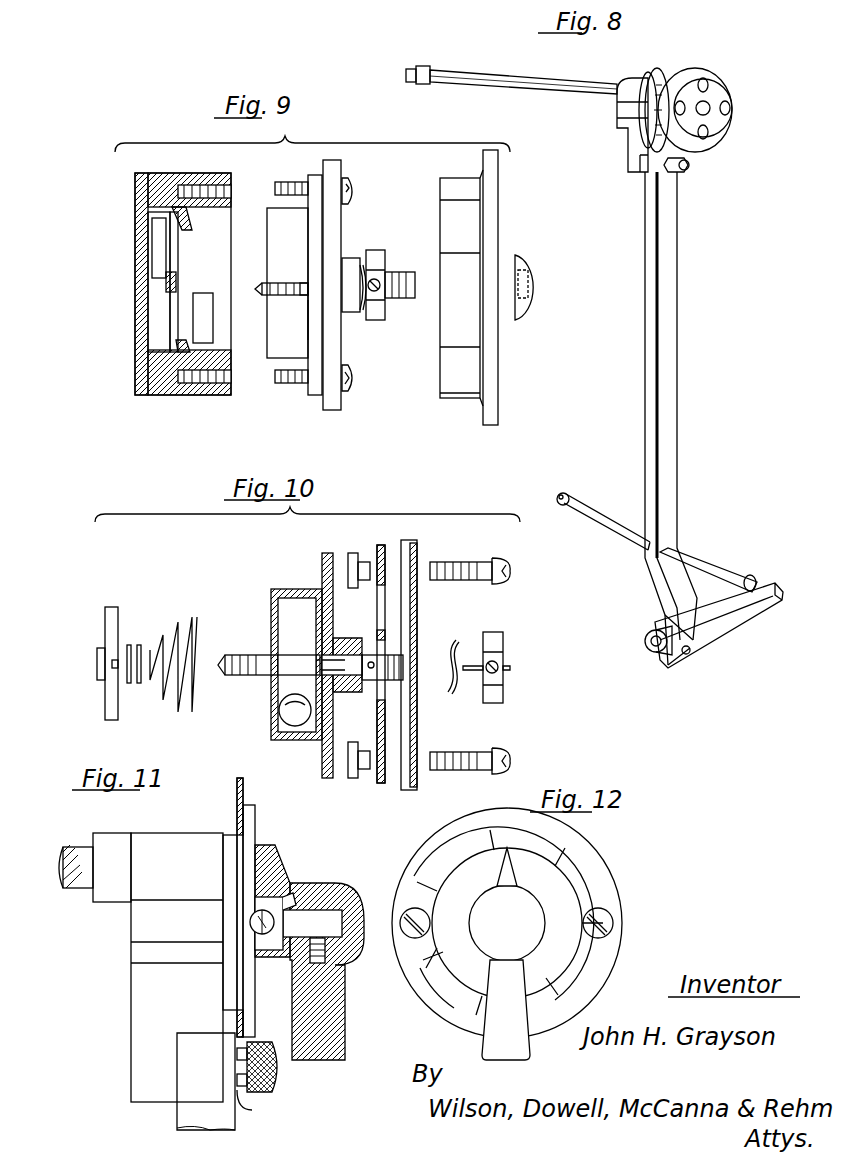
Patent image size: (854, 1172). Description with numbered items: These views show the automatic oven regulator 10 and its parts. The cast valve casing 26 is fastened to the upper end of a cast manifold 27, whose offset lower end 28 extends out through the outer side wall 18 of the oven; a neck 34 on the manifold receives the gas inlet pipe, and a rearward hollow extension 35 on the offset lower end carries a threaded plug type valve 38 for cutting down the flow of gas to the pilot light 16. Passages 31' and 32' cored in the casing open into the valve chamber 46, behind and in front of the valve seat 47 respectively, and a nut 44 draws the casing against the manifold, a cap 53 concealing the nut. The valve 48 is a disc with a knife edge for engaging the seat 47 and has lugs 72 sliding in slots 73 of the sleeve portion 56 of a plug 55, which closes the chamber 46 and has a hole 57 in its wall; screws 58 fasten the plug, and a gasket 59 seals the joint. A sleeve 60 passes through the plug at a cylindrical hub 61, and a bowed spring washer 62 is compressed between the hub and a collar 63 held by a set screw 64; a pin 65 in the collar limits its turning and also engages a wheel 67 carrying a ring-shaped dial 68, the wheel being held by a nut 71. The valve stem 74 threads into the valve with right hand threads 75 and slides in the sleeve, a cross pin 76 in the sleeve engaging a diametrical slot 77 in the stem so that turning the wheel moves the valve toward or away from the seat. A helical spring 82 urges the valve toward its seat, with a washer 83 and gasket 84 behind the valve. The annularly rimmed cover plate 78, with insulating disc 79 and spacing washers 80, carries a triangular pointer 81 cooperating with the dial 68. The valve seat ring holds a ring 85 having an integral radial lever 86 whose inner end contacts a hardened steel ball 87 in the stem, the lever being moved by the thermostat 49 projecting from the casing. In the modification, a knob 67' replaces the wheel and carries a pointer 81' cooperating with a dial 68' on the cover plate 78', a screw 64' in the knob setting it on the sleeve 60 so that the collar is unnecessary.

In FIG. 8, the automatic oven regulator 10 is at (718, 60).
In FIG. 8, the pilot light 16 is at (587, 520).
In FIG. 11, the outer side wall 18 is at (237, 790).
In FIG. 8, the valve casing 26 is at (622, 126).
In FIG. 9, the valve casing 26 is at (135, 362).
In FIG. 11, the valve casing 26 is at (155, 838).
In FIG. 8, the manifold 27 is at (676, 310).
In FIG. 11, the manifold 27 is at (177, 1122).
In FIG. 8, the offset lower end 28 is at (690, 608).
In FIG. 9, the passage 31' is at (133, 282).
In FIG. 9, the passage 32' is at (226, 318).
In FIG. 8, the neck 34 is at (645, 638).
In FIG. 8, the rearward hollow extension 35 is at (730, 622).
In FIG. 8, the threaded plug type valve 38 is at (688, 655).
In FIG. 11, the nut 44 is at (252, 1110).
In FIG. 9, the valve chamber 46 is at (218, 352).
In FIG. 9, the valve seat 47 is at (188, 224).
In FIG. 10, the valve 48 is at (112, 607).
In FIG. 8, the thermostat 49 is at (526, 77).
In FIG. 11, the thermostat 49 is at (79, 900).
In FIG. 8, the cap 53 is at (691, 166).
In FIG. 11, the cap 53 is at (280, 1084).
In FIG. 9, the plug 55 is at (318, 244).
In FIG. 10, the plug 55 is at (332, 625).
In FIG. 9, the sleeve portion 56 is at (275, 228).
In FIG. 10, the sleeve portion 56 is at (288, 589).
In FIG. 10, the hole 57 is at (283, 712).
In FIG. 9, the screws 58 is at (352, 190).
In FIG. 10, the screws 58 is at (466, 562).
In FIG. 11, the screws 58 is at (250, 922).
In FIG. 12, the screws 58 is at (613, 923).
In FIG. 9, the gasket 59 is at (312, 320).
In FIG. 9, the sleeve 60 is at (398, 274).
In FIG. 10, the sleeve 60 is at (370, 683).
In FIG. 11, the sleeve 60 is at (312, 923).
In FIG. 9, the cylindrical hub 61 is at (350, 313).
In FIG. 10, the cylindrical hub 61 is at (348, 640).
In FIG. 11, the cylindrical hub 61 is at (268, 952).
In FIG. 9, the bowed spring washer 62 is at (366, 270).
In FIG. 10, the bowed spring washer 62 is at (449, 690).
In FIG. 11, the bowed spring washer 62 is at (292, 898).
In FIG. 9, the collar 63 is at (378, 322).
In FIG. 10, the collar 63 is at (500, 635).
In FIG. 9, the set screw 64 is at (395, 302).
In FIG. 10, the set screw 64 is at (514, 670).
In FIG. 11, the screw 64' is at (295, 979).
In FIG. 10, the pin 65 is at (470, 672).
In FIG. 8, the wheel 67 is at (713, 110).
In FIG. 9, the wheel 67 is at (506, 287).
In FIG. 11, the knob 67' is at (327, 960).
In FIG. 12, the knob 67' is at (507, 923).
In FIG. 9, the dial 68 is at (459, 310).
In FIG. 12, the dial 68' is at (519, 925).
In FIG. 8, the nut 71 is at (710, 104).
In FIG. 9, the nut 71 is at (532, 278).
In FIG. 9, the lugs 72 is at (295, 283).
In FIG. 10, the lugs 72 is at (116, 668).
In FIG. 9, the slots 73 is at (304, 296).
In FIG. 10, the valve stem 74 is at (285, 655).
In FIG. 10, the right hand threads 75 is at (240, 655).
In FIG. 10, the cross pin 76 is at (374, 662).
In FIG. 10, the diametrical slot 77 is at (318, 663).
In FIG. 8, the cover plate 78 is at (644, 95).
In FIG. 9, the cover plate 78 is at (331, 304).
In FIG. 10, the cover plate 78 is at (423, 654).
In FIG. 11, the cover plate 78' is at (270, 915).
In FIG. 12, the cover plate 78' is at (530, 923).
In FIG. 10, the disc 79 is at (386, 610).
In FIG. 10, the spacing washers 80 is at (352, 553).
In FIG. 8, the pointer 81 is at (668, 90).
In FIG. 9, the pointer 81 is at (331, 377).
In FIG. 11, the pointer 81' is at (286, 892).
In FIG. 12, the pointer 81' is at (494, 954).
In FIG. 10, the helical spring 82 is at (196, 622).
In FIG. 10, the washer 83 is at (140, 645).
In FIG. 10, the gasket 84 is at (129, 645).
In FIG. 9, the ring 85 is at (172, 328).
In FIG. 9, the radial lever 86 is at (168, 282).
In FIG. 9, the hardened steel ball 87 is at (260, 290).
In FIG. 10, the hardened steel ball 87 is at (222, 673).